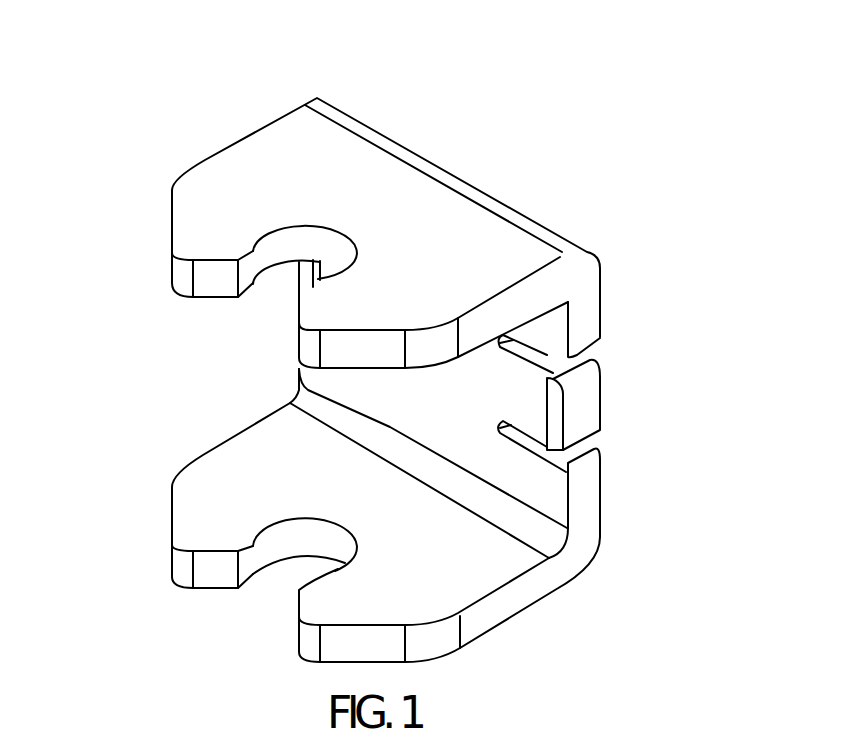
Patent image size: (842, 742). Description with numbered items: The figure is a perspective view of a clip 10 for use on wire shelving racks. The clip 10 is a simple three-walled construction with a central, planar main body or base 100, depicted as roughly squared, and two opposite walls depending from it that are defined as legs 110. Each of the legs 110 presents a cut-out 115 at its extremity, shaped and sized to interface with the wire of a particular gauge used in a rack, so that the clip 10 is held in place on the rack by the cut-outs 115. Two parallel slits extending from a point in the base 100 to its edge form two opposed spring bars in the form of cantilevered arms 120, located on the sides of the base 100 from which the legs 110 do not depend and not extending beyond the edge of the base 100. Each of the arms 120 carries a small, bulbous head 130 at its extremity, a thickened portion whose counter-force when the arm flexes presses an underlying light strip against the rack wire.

The clip 10 is at (450, 130).
The base 100 is at (600, 312).
The legs 110 is at (205, 187).
The cut-out 115 is at (280, 525).
The cantilevered arms 120 is at (600, 398).
The bulbous head 130 is at (597, 477).